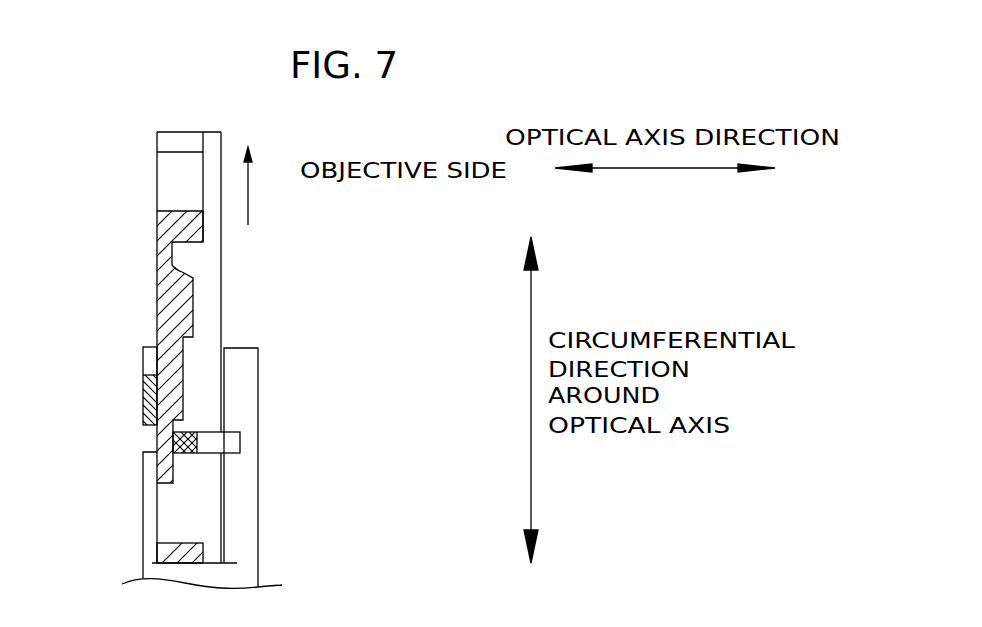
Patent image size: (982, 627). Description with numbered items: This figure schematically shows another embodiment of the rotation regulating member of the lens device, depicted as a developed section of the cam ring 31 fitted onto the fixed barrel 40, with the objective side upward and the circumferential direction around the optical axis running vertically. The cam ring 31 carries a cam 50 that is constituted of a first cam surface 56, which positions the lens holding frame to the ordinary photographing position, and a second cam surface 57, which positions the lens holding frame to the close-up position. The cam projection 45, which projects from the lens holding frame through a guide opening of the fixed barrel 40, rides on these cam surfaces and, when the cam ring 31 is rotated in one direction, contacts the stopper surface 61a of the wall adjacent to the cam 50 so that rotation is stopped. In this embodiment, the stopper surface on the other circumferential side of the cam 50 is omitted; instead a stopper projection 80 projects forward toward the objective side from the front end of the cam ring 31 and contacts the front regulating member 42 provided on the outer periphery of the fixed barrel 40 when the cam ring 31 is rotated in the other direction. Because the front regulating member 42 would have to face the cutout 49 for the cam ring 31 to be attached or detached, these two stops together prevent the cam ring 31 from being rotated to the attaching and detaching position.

The cam ring 31 is at (158, 185).
The stopper surface 61a is at (190, 243).
The first cam surface 56 is at (193, 293).
The second cam surface 57 is at (229, 410).
The cam 50 is at (228, 347).
The front regulating member 42 is at (143, 385).
The stopper projection 80 is at (145, 427).
The cam projection 45 is at (200, 443).
The cutout 49 is at (183, 513).
The fixed barrel 40 is at (255, 518).